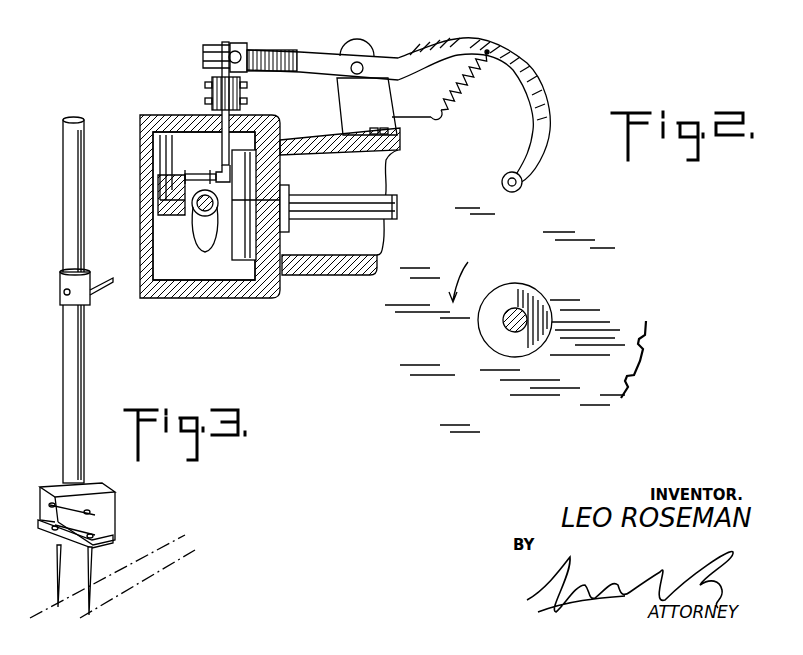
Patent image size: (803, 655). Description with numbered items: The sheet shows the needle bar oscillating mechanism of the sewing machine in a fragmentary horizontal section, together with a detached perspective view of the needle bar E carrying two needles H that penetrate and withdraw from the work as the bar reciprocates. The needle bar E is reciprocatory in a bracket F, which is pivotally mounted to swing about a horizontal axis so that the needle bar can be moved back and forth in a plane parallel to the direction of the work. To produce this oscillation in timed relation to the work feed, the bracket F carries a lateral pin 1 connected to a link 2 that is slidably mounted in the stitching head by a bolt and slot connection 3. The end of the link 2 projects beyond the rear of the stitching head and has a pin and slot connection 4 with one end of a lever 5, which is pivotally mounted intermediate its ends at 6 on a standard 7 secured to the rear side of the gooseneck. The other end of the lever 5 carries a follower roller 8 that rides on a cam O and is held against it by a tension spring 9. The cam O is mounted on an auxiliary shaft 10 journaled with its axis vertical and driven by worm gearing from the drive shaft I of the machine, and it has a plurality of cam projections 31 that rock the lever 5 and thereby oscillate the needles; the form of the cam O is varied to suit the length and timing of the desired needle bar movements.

In FIG. 2, the lateral pin 1 is at (215, 172).
In FIG. 2, the link 2 is at (222, 125).
In FIG. 2, the bolt and slot connection 3 is at (214, 88).
In FIG. 2, the pin and slot connection 4 is at (238, 55).
In FIG. 2, the lever 5 is at (298, 54).
In FIG. 2, the pivot 6 is at (362, 63).
In FIG. 2, the standard 7 is at (346, 97).
In FIG. 2, the follower roller 8 is at (508, 173).
In FIG. 2, the tension spring 9 is at (470, 76).
In FIG. 2, the auxiliary shaft 10 is at (516, 304).
In FIG. 2, the cam projections 31 is at (620, 236).
In FIG. 2, the cam O is at (564, 212).
In FIG. 2, the bracket F is at (160, 203).
In FIG. 2, the needle bar E is at (205, 212).
In FIG. 3, the needle bar E is at (63, 366).
In FIG. 2, the drive shaft I is at (342, 205).
In FIG. 3, the needles H is at (90, 570).